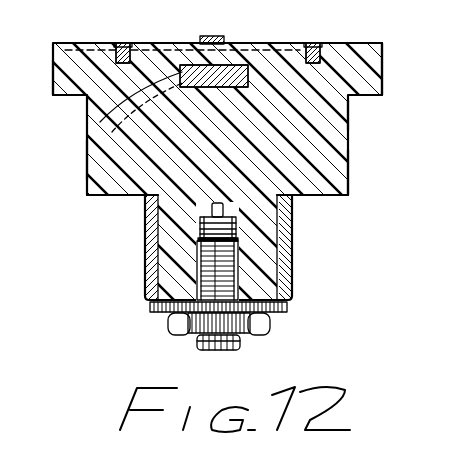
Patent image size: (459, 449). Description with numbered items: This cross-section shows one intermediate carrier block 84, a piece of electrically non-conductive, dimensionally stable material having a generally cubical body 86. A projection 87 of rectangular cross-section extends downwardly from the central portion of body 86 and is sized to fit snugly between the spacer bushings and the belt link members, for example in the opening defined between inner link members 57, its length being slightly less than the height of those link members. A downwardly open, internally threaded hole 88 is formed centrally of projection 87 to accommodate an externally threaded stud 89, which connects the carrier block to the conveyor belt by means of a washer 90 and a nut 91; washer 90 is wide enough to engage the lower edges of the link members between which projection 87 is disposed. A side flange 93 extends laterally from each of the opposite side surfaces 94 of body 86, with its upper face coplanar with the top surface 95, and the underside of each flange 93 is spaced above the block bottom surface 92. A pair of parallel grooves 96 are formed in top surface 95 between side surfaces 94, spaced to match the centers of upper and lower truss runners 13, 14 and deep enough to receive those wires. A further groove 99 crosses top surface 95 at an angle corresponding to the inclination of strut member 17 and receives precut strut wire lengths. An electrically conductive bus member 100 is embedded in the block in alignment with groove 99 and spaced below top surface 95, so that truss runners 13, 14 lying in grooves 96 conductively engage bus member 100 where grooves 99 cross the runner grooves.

The upper truss runner 13 is at (336, 44).
The lower truss runner 14 is at (128, 52).
The truss strut member 17 is at (182, 47).
The inner link member 57 is at (296, 251).
The intermediate carrier block 84 is at (349, 142).
The body 86 is at (350, 173).
The projection 87 is at (272, 219).
The internally threaded hole 88 is at (160, 225).
The externally threaded stud 89 is at (240, 347).
The washer 90 is at (290, 311).
The nut 91 is at (172, 325).
The block bottom surface 92 is at (92, 199).
The side flange 93 is at (383, 71).
The side surface 94 is at (350, 113).
The top surface 95 is at (270, 43).
The groove 96 is at (119, 45).
The groove 99 is at (212, 36).
The bus member 100 is at (100, 121).